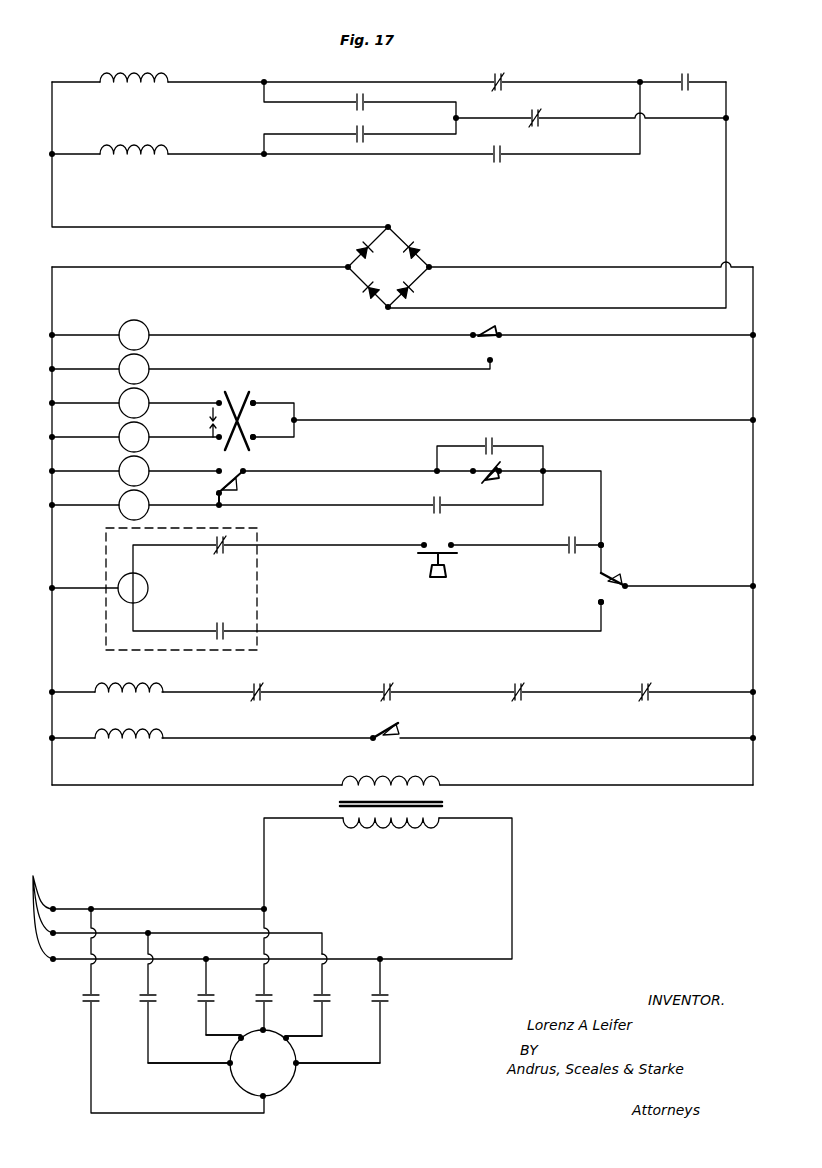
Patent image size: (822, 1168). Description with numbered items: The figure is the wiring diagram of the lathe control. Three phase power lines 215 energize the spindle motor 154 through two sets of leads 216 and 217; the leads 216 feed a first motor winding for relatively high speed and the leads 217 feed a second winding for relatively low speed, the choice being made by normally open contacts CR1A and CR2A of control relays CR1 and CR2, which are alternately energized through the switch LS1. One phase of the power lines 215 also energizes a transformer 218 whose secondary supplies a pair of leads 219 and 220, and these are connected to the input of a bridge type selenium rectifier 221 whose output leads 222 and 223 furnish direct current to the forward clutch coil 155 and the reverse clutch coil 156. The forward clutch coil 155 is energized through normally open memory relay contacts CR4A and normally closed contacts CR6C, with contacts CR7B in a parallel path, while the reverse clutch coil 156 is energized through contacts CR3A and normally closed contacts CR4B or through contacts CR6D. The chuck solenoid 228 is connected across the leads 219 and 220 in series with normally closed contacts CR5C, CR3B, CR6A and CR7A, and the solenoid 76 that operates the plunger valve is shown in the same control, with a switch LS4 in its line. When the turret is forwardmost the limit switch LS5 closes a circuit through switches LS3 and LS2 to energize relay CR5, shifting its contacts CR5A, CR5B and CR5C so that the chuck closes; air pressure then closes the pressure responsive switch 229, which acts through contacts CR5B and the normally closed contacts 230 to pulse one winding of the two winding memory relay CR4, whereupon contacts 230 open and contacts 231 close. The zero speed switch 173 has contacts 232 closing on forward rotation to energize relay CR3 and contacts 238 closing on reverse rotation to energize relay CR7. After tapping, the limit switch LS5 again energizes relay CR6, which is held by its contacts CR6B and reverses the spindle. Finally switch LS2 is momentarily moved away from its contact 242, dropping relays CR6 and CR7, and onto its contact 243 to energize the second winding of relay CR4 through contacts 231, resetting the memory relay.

The forward clutch coil 155 is at (138, 80).
The reverse clutch coil 156 is at (138, 154).
The lead 222 is at (52, 213).
The lead 223 is at (726, 233).
The bridge type selenium rectifier 221 is at (430, 263).
The lead 219 is at (80, 528).
The lead 220 is at (753, 506).
The transformer 218 is at (446, 806).
The three phase power lines 215 is at (206, 909).
The spindle motor 154 is at (286, 1084).
The leads 216 is at (235, 1035).
The leads 217 is at (322, 1062).
The solenoid valve mechanism 228 is at (128, 690).
The solenoid 76 is at (125, 745).
The pressure responsive switch 229 is at (420, 553).
The normally closed contacts 230 is at (220, 556).
The memory relay contacts 231 is at (220, 622).
The contacts 232 is at (258, 440).
The contacts 238 is at (257, 401).
The zero speed switch 173 is at (242, 425).
The contact 242 is at (603, 574).
The contact 243 is at (600, 603).
The control relay CR1 is at (138, 321).
The control relay CR2 is at (119, 366).
The relay CR3 is at (118, 435).
The two winding memory relay CR4 is at (150, 588).
The relay CR5 is at (118, 502).
The relay CR6 is at (148, 468).
The relay CR7 is at (148, 400).
The normally open contacts CR1A is at (208, 1002).
The normally open contacts CR2A is at (380, 996).
The normally open contacts CR3A is at (359, 142).
The normally closed contacts CR3B is at (648, 684).
The normally open contacts CR4A is at (689, 75).
The normally closed contacts CR4B is at (539, 125).
The normally open contacts CR5A is at (445, 510).
The normally open contacts CR5B is at (568, 540).
The normally closed contacts CR5C is at (258, 684).
The normally closed contacts CR6A is at (390, 684).
The contacts CR6B is at (497, 443).
The normally closed contacts CR6C is at (503, 80).
The normally open contacts CR6D is at (504, 159).
The contacts CR7A is at (522, 684).
The contacts CR7B is at (362, 98).
The switch LS1 is at (492, 358).
The switch LS2 is at (598, 586).
The switch LS3 is at (238, 488).
The limit switch LS4 is at (375, 745).
The limit switch LS5 is at (482, 475).